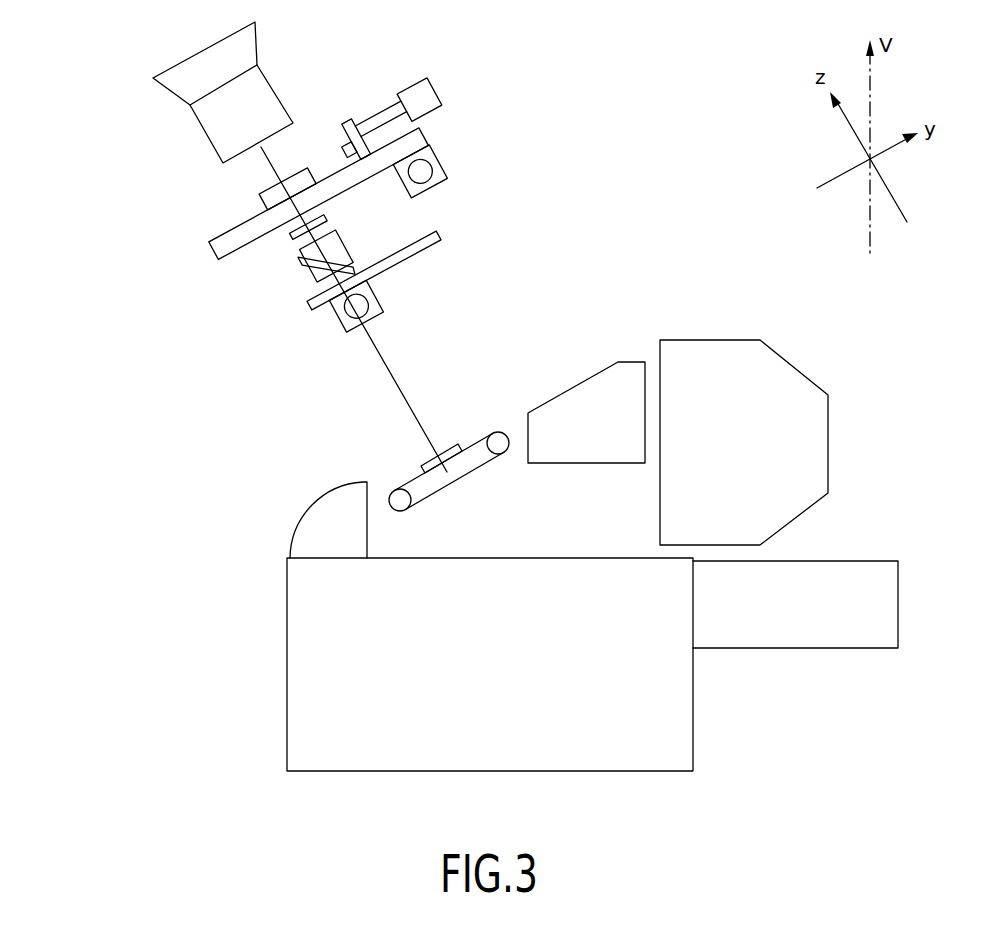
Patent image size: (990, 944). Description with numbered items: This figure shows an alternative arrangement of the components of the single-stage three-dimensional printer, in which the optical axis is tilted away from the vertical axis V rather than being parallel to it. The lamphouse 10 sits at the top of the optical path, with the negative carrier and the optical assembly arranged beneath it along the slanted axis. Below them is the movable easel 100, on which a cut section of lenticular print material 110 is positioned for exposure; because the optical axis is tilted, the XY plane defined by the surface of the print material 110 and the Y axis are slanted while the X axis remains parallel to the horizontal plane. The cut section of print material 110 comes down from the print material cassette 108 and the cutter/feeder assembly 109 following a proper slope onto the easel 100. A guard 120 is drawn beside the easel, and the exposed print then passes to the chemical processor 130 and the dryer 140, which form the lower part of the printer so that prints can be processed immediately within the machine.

The lamphouse 10 is at (250, 46).
The movable easel 100 is at (471, 453).
The print material cassette 108 is at (767, 368).
The cutter/feeder assembly 109 is at (582, 393).
The print material 110 is at (428, 467).
The guard 120 is at (317, 520).
The chemical processor 130 is at (298, 621).
The dryer 140 is at (879, 606).